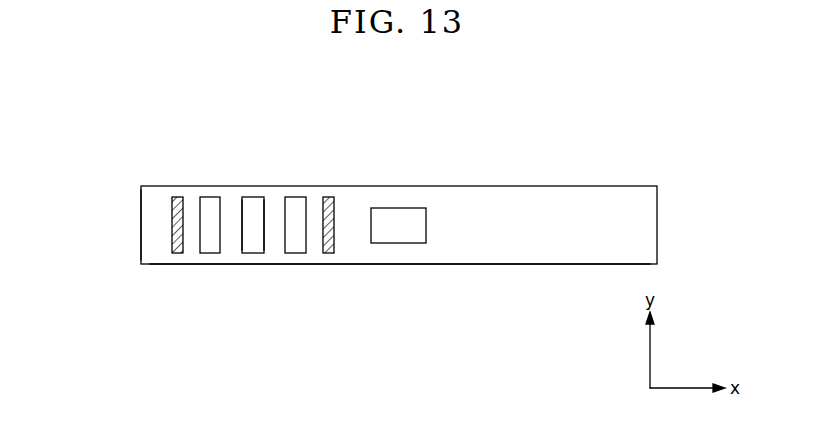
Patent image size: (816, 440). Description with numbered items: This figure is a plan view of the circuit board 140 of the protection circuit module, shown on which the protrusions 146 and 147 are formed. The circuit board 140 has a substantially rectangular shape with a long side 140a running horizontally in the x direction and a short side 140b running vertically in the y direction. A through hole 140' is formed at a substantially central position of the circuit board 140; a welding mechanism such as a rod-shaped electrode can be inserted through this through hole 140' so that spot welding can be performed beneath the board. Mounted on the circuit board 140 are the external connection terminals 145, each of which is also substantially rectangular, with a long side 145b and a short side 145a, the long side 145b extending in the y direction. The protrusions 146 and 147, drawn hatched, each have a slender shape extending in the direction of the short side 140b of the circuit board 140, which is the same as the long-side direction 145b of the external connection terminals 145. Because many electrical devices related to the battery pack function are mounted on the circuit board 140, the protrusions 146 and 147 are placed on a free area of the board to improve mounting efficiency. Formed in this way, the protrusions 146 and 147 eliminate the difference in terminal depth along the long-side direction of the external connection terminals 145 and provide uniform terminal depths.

The circuit board 140 is at (399, 195).
The through hole 140' is at (398, 185).
The long side 140a is at (378, 264).
The short side 140b is at (140, 233).
The external connection terminal 145 is at (253, 197).
The short side 145a is at (255, 253).
The long side 145b is at (242, 243).
The protrusion 146 is at (179, 197).
The protrusion 147 is at (330, 197).